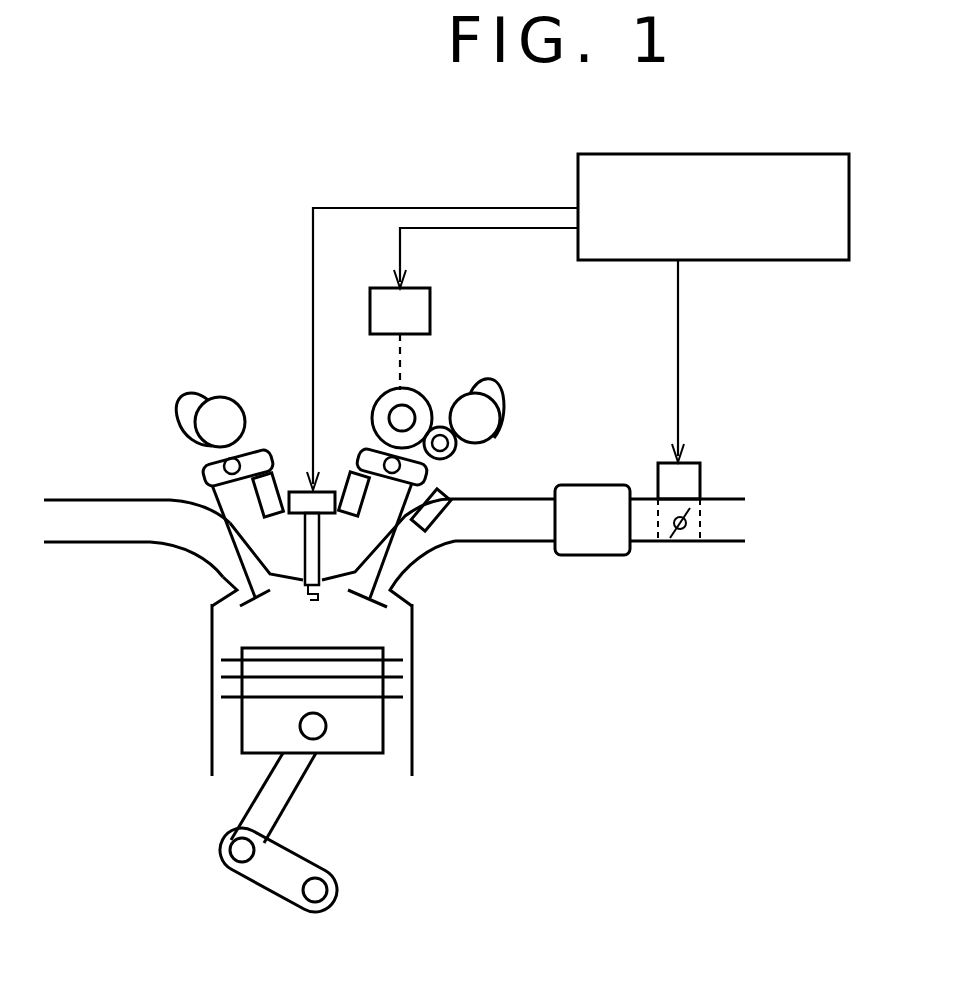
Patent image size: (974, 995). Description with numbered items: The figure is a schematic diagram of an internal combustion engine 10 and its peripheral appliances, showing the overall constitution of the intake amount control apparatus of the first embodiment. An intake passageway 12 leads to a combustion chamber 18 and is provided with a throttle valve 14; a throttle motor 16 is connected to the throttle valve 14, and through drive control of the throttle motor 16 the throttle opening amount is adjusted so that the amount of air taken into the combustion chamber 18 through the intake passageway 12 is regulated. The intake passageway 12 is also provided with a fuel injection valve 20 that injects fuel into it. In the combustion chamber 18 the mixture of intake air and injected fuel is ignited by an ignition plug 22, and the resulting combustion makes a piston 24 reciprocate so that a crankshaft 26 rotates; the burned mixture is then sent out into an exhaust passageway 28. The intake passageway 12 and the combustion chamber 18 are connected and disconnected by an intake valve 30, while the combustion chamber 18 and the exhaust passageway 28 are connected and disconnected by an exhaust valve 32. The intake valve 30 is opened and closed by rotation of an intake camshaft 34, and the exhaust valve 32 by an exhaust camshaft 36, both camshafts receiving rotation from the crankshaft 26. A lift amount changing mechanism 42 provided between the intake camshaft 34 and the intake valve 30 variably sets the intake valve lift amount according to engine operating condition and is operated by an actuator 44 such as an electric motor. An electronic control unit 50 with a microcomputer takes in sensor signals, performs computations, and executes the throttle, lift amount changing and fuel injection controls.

The internal combustion engine 10 is at (175, 723).
The intake passageway 12 is at (496, 543).
The throttle valve 14 is at (677, 545).
The throttle motor 16 is at (668, 462).
The combustion chamber 18 is at (212, 623).
The fuel injection valve 20 is at (440, 532).
The ignition plug 22 is at (305, 546).
The piston 24 is at (370, 755).
The crankshaft 26 is at (323, 872).
The exhaust passageway 28 is at (141, 543).
The intake valve 30 is at (382, 556).
The exhaust valve 32 is at (228, 568).
The intake camshaft 34 is at (500, 436).
The exhaust camshaft 36 is at (204, 444).
The lift amount changing mechanism 42 is at (380, 396).
The actuator 44 is at (418, 288).
The electronic control unit 50 is at (852, 170).